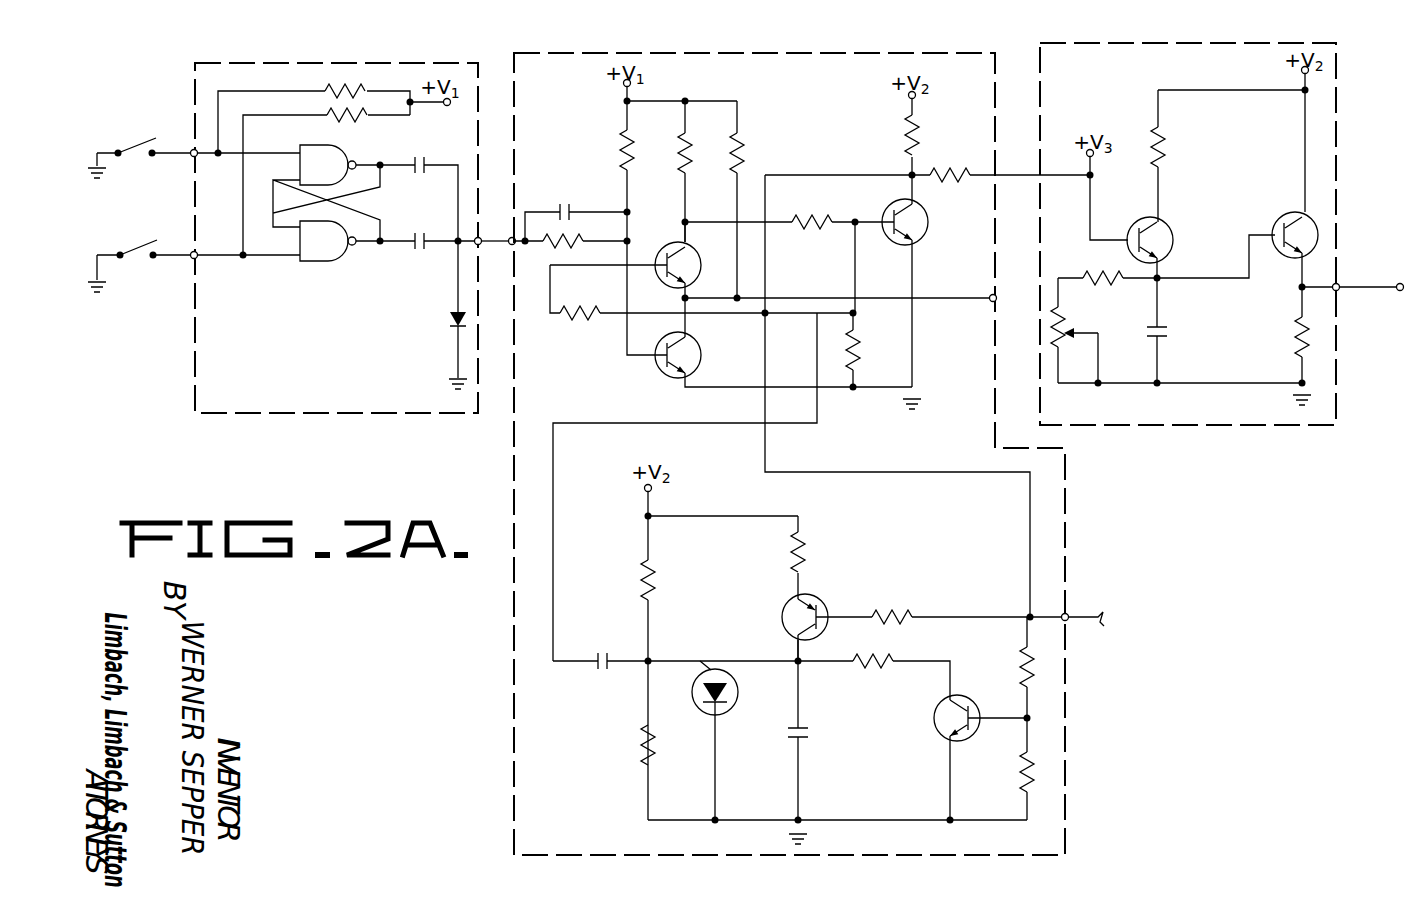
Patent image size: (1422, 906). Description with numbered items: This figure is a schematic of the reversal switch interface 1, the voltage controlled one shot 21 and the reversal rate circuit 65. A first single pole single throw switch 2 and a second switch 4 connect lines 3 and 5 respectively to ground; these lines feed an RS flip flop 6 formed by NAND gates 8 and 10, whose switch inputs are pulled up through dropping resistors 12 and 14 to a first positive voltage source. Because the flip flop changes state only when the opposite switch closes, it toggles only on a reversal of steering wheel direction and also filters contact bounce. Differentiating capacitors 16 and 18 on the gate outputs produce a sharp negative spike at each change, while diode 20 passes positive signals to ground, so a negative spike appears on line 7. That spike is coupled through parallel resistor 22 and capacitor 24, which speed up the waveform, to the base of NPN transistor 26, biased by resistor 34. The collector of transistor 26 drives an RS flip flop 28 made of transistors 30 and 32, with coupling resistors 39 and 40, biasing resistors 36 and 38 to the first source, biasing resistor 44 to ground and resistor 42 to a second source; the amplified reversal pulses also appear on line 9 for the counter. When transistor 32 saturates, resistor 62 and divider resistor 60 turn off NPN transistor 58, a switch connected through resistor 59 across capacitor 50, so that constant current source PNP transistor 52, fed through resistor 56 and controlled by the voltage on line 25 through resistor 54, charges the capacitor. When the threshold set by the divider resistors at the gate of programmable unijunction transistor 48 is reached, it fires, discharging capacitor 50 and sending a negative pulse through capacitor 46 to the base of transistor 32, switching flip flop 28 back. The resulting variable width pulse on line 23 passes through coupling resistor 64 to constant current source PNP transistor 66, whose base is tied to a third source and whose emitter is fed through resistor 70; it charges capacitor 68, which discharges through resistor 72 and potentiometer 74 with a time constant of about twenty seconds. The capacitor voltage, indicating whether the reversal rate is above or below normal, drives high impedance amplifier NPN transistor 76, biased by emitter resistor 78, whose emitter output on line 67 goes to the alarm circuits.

The reversal switch interface 1 is at (194, 56).
The first single pole single throw switch 2 is at (140, 142).
The line 3 is at (176, 150).
The second single pole single throw switch 4 is at (124, 263).
The line 5 is at (169, 263).
The RS flip flop 6 is at (326, 247).
The line 7 is at (492, 249).
The NAND gate 8 is at (357, 165).
The line 9 is at (988, 295).
The NAND gate 10 is at (357, 240).
The dropping resistor 12 is at (352, 84).
The dropping resistor 14 is at (360, 118).
The differentiating capacitor 16 is at (425, 160).
The differentiating capacitor 18 is at (418, 250).
The diode 20 is at (452, 326).
The voltage controlled one shot 21 is at (505, 729).
The resistor 22 is at (553, 244).
The line 23 is at (1018, 172).
The capacitor 24 is at (567, 203).
The line 25 is at (1069, 615).
The NPN transistor 26 is at (702, 356).
The RS flip flop 28 is at (810, 264).
The transistor 30 is at (702, 263).
The transistor 32 is at (895, 246).
The biasing resistor 34 is at (622, 145).
The biasing resistor 36 is at (681, 150).
The biasing resistor 38 is at (742, 146).
The coupling resistor 39 is at (588, 320).
The coupling resistor 40 is at (819, 218).
The biasing resistor 42 is at (907, 127).
The biasing resistor 44 is at (862, 350).
The capacitor 46 is at (600, 672).
The programmable unijunction transistor 48 is at (708, 716).
The capacitor 50 is at (651, 575).
The constant current source PNP transistor 52 is at (642, 740).
The resistor 54 is at (910, 612).
The resistor 56 is at (805, 558).
The NPN transistor 58 is at (957, 742).
The resistor 59 is at (876, 665).
The divider resistor 60 is at (1021, 784).
The resistor 62 is at (1019, 661).
The coupling resistor 64 is at (947, 183).
The reversal rate circuit 65 is at (1266, 436).
The constant current source PNP transistor 66 is at (1150, 217).
The output terminal 67 is at (1385, 286).
The capacitor 68 is at (1170, 330).
The resistor 70 is at (1156, 140).
The resistor 72 is at (1096, 272).
The potentiometer 74 is at (1068, 315).
The NPN transistor 76 is at (1292, 212).
The biasing resistor 78 is at (1292, 334).